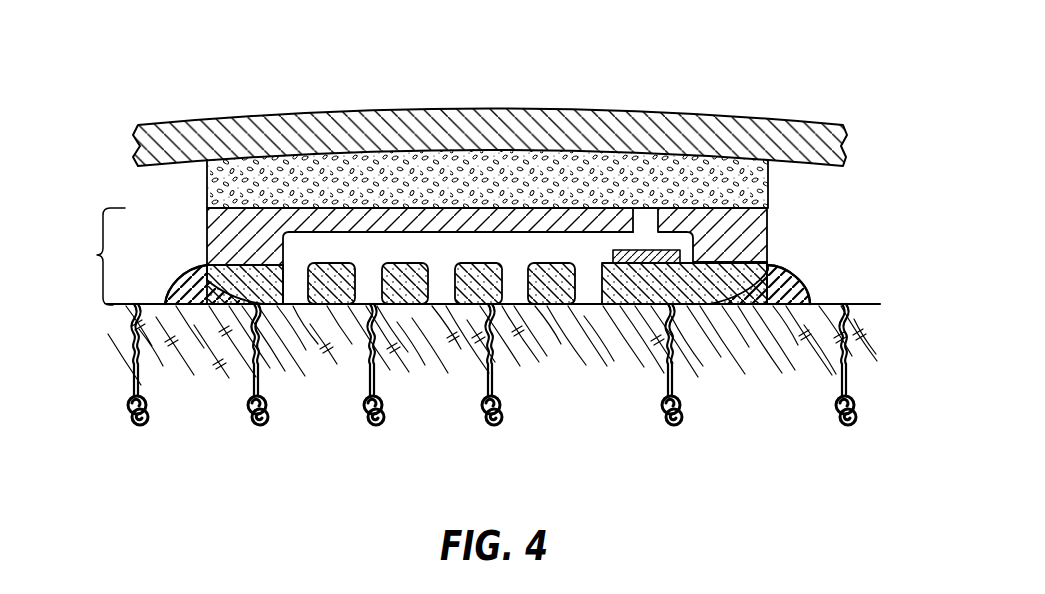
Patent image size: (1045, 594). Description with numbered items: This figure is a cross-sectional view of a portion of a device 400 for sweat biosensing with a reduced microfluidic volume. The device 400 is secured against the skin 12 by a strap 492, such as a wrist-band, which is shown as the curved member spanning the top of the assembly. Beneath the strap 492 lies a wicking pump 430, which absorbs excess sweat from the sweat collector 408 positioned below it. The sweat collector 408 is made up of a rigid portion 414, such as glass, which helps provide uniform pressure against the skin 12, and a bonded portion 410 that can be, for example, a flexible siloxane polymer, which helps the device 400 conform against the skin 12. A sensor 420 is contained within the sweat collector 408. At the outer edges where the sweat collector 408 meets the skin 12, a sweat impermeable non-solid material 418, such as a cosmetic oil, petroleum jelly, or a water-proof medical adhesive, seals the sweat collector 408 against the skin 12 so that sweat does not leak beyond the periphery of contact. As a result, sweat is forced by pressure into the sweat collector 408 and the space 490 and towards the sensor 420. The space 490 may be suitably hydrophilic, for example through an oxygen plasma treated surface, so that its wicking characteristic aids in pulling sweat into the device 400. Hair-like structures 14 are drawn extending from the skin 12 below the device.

The device 400 is at (200, 76).
The strap 492 is at (460, 112).
The wicking pump 430 is at (338, 167).
The rigid portion 414 is at (212, 228).
The space 490 is at (517, 253).
The sensor 420 is at (672, 252).
The bonded portion 410 is at (327, 306).
The sweat impermeable non-solid material 418 is at (178, 286).
The sweat collector 408 is at (87, 256).
The skin 12 is at (760, 357).
The hair follicles 14 is at (150, 412).